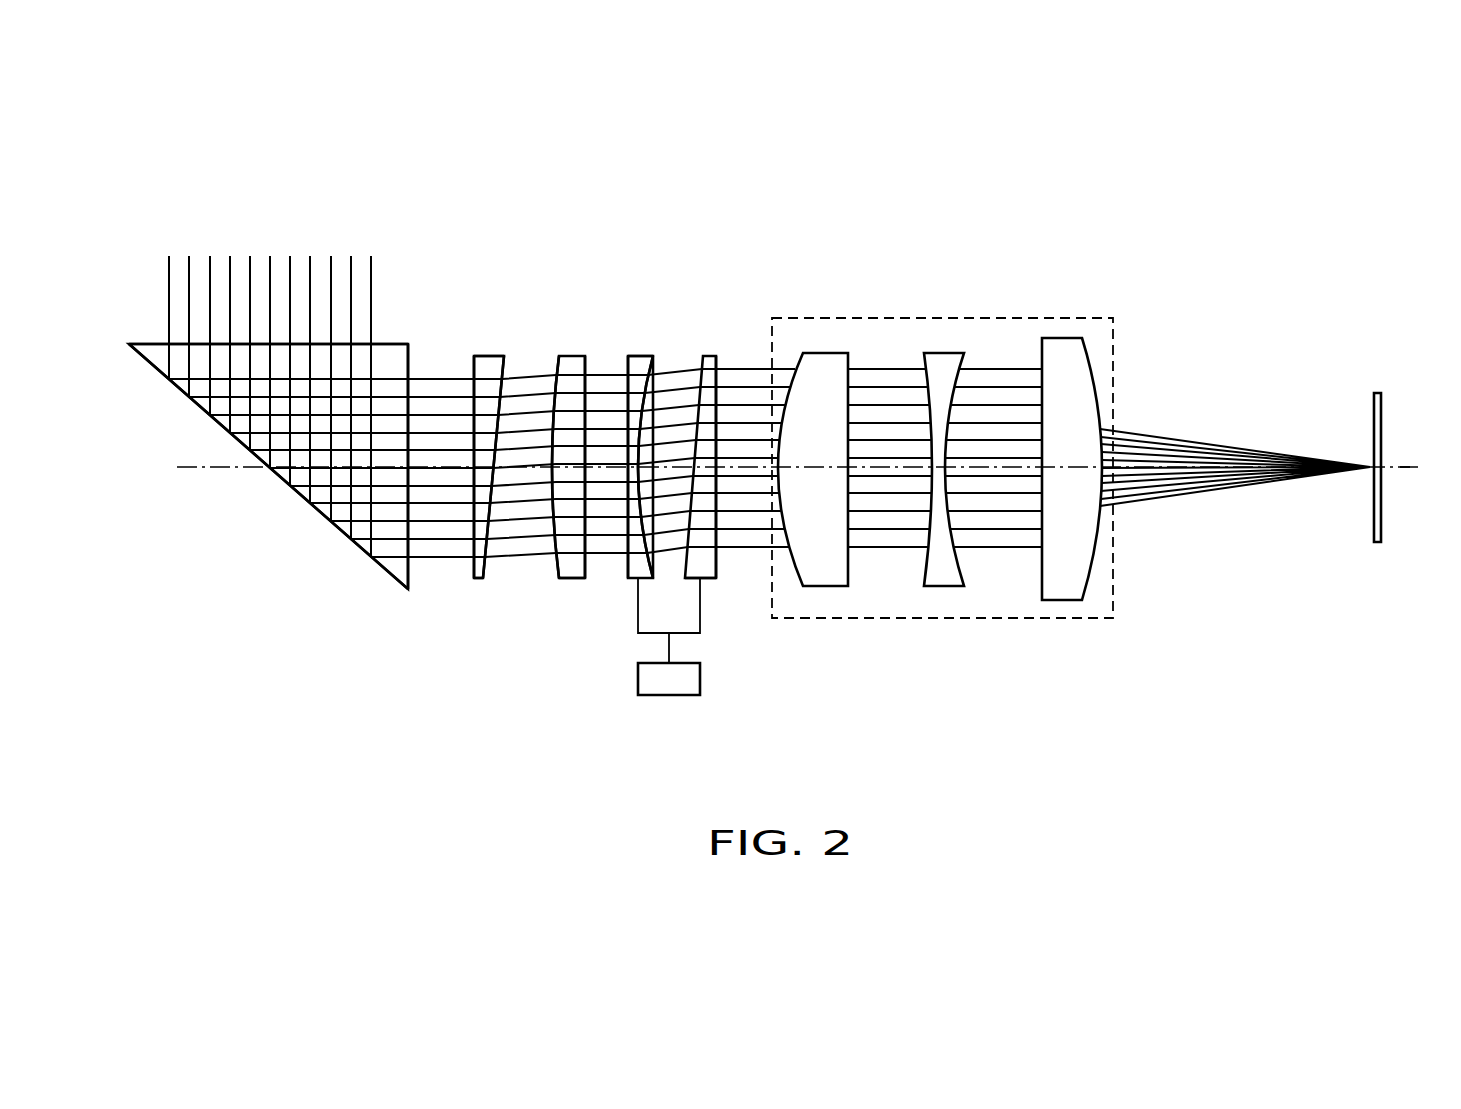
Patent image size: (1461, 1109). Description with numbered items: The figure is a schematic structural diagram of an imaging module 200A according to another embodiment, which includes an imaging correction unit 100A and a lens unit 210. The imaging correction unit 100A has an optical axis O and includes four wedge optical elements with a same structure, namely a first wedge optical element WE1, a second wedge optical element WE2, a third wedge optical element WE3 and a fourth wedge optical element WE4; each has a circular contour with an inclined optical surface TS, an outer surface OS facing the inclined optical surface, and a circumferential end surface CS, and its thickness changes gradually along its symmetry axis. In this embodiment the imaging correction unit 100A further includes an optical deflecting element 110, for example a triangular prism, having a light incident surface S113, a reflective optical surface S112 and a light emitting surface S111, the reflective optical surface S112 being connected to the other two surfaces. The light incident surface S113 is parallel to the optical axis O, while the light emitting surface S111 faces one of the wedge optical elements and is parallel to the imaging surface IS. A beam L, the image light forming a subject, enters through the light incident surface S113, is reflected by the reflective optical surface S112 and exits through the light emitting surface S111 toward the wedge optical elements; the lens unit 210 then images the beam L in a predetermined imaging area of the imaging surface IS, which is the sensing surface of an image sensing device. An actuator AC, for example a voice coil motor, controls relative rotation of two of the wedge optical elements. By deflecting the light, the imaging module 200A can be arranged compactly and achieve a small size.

The beam L is at (189, 268).
The optical deflecting element 110 is at (385, 572).
The light emitting surface S111 is at (410, 546).
The reflective optical surface S112 is at (315, 508).
The light incident surface S113 is at (392, 342).
The imaging correction unit 100A is at (757, 280).
The first wedge optical element WE1 is at (478, 355).
The second wedge optical element WE2 is at (572, 355).
The third wedge optical element WE3 is at (647, 355).
The fourth wedge optical element WE4 is at (710, 355).
The circumferential end surface CS is at (633, 355).
The inclined optical surface TS is at (652, 398).
The outer surface OS is at (472, 528).
The actuator AC is at (677, 692).
The lens unit 210 is at (1063, 317).
The imaging surface IS is at (1374, 415).
The optical axis O is at (1405, 466).
The imaging module 200A is at (1393, 702).